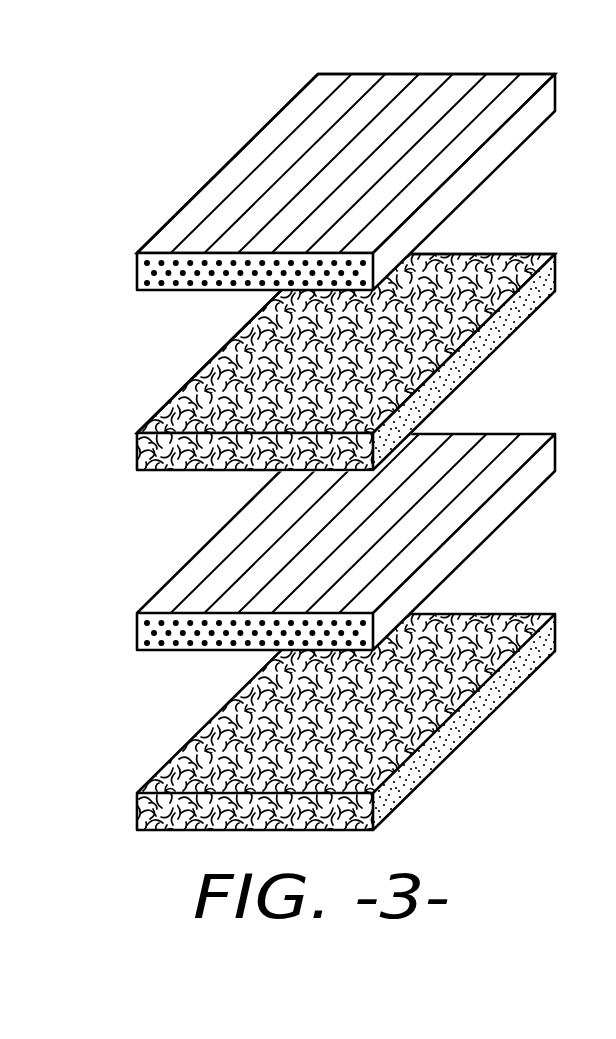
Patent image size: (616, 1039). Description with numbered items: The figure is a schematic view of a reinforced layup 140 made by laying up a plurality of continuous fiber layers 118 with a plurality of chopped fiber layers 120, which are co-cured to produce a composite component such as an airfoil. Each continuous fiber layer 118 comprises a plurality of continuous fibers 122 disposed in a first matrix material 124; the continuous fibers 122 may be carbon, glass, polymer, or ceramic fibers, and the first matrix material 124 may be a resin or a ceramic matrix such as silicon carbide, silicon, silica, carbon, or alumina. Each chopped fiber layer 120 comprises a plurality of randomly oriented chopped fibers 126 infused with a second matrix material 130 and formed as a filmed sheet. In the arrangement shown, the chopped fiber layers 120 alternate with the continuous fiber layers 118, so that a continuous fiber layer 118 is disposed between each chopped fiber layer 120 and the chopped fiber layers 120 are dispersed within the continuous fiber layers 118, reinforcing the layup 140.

The reinforced layup 140 is at (216, 100).
The continuous fiber layer 118 is at (320, 331).
The chopped fiber layer 120 is at (323, 515).
The continuous fibers 122 is at (495, 88).
The first matrix material 124 is at (392, 85).
The second matrix material 130 is at (497, 255).
The chopped fibers 126 is at (440, 328).